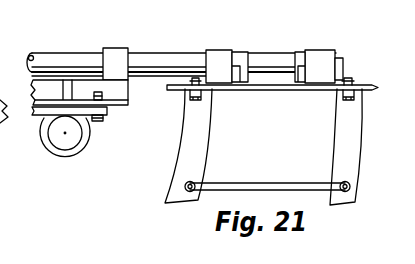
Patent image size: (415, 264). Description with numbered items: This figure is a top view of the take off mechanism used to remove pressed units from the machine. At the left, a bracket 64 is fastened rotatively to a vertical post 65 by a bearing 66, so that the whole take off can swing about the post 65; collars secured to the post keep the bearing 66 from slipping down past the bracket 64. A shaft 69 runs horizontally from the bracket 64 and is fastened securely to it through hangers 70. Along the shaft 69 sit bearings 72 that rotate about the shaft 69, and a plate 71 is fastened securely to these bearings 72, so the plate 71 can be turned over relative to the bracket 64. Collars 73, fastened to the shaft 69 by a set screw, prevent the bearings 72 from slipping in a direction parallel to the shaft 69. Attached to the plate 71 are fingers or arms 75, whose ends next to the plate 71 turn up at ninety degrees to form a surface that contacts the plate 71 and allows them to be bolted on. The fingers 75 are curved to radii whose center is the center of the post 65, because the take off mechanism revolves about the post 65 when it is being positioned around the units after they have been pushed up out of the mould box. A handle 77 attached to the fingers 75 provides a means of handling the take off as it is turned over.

The bracket 64 is at (129, 98).
The post 65 is at (73, 152).
The bearing 66 is at (89, 134).
The shaft 69 is at (178, 33).
The hangers 70 is at (127, 48).
The plate 71 is at (378, 88).
The bearings 72 is at (224, 50).
The collars 73 is at (300, 50).
The fingers 75 is at (213, 135).
The handle 77 is at (272, 181).